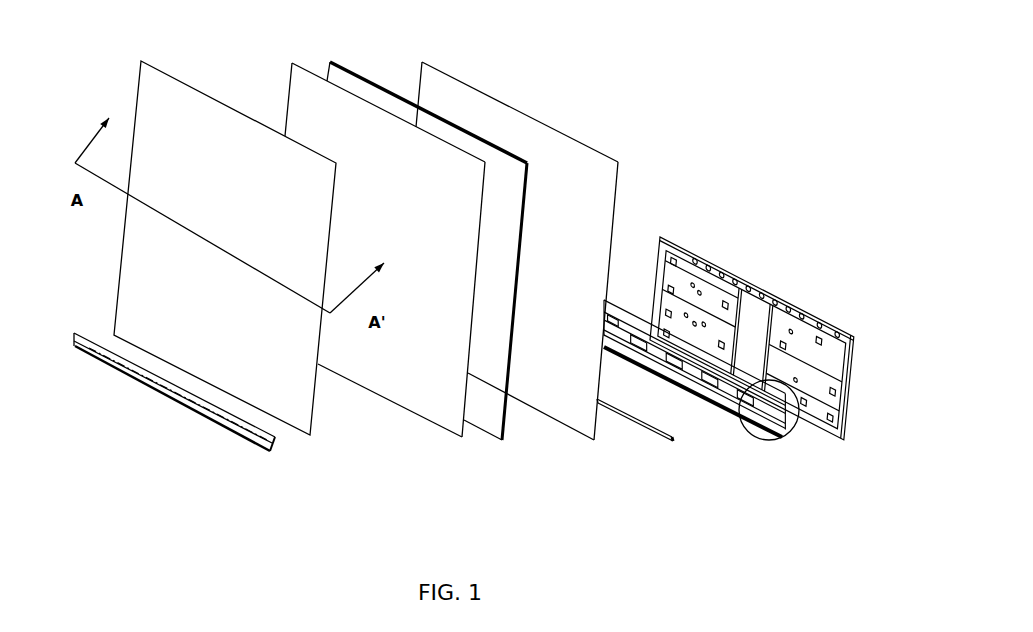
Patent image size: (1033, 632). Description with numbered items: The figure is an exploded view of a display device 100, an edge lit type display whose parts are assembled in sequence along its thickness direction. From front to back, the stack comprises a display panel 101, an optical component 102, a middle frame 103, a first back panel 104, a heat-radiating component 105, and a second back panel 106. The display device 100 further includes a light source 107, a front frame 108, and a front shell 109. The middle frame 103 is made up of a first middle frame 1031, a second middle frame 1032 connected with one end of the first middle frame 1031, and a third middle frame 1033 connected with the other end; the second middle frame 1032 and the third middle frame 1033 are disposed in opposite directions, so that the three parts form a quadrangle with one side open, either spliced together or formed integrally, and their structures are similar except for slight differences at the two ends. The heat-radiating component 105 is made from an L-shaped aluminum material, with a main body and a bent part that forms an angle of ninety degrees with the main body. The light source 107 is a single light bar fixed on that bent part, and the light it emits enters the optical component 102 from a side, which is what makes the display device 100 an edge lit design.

The display device 100 is at (577, 33).
The display panel 101 is at (177, 102).
The optical component 102 is at (290, 65).
The middle frame 103 is at (451, 224).
The first middle frame 1031 is at (387, 84).
The second middle frame 1032 is at (320, 78).
The third middle frame 1033 is at (533, 200).
The first back panel 104 is at (440, 100).
The heat-radiating component 105 is at (615, 297).
The second back panel 106 is at (695, 262).
The light source 107 is at (717, 410).
The front frame 108 is at (624, 416).
The front shell 109 is at (190, 410).